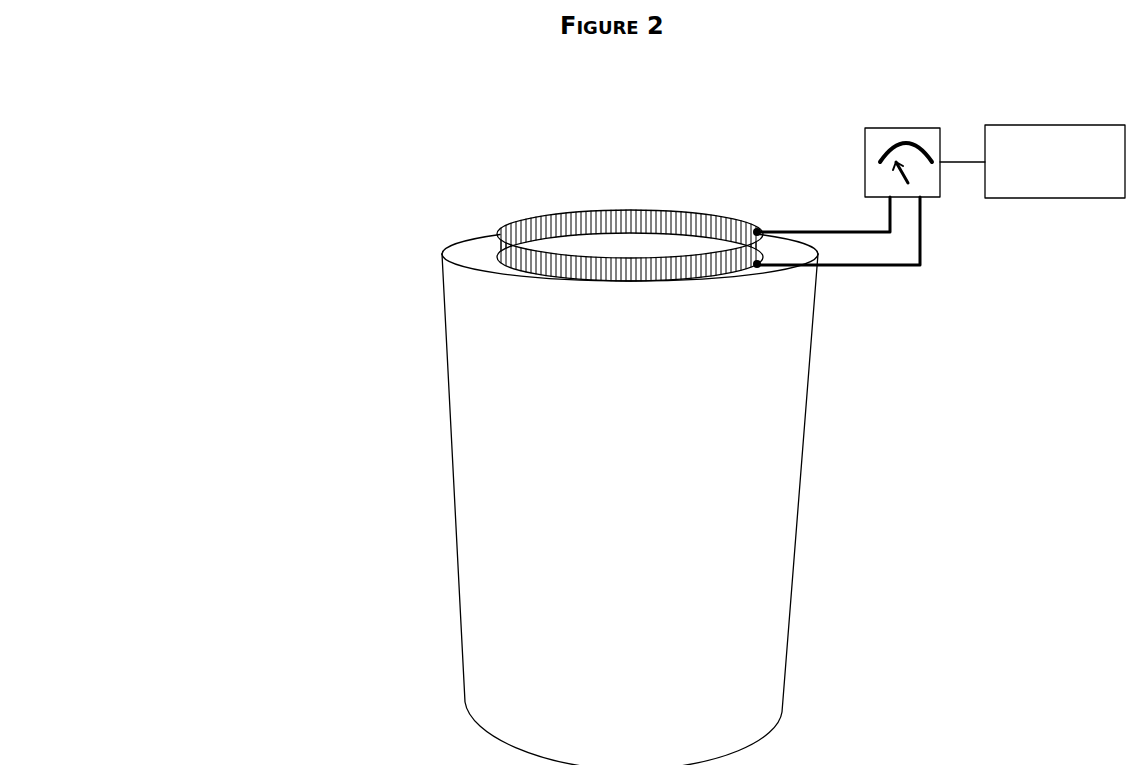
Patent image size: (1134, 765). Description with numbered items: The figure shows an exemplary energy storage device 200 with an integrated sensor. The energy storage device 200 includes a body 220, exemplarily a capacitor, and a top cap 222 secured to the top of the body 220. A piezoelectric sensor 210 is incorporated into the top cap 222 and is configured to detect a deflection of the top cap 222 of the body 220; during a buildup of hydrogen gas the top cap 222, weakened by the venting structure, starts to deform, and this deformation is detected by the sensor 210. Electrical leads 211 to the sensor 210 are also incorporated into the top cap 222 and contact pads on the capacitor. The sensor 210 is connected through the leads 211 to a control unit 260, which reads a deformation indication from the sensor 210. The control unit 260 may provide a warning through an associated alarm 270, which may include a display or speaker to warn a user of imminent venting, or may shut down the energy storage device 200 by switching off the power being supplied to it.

The energy storage device 200 is at (208, 113).
The piezoelectric sensor 210 is at (533, 210).
The electrical leads 211 is at (877, 277).
The body 220 is at (797, 525).
The top cap 222 is at (465, 253).
The control unit 260 is at (865, 162).
The alarm 270 is at (1078, 202).